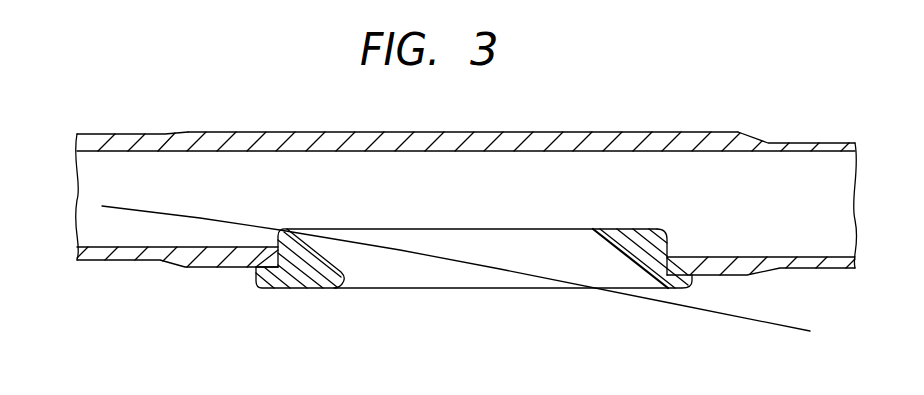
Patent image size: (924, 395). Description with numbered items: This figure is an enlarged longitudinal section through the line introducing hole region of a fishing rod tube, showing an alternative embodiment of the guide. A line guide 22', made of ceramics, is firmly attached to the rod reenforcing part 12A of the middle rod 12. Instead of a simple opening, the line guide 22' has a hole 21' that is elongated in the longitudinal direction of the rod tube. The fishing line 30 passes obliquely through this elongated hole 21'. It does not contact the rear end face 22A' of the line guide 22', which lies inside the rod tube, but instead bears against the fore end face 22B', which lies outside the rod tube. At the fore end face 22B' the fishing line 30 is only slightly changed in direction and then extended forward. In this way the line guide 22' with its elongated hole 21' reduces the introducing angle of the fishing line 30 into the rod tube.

The middle rod 12 is at (431, 140).
The rod reenforcing part 12A is at (570, 140).
The hole 21' is at (477, 296).
The line guide 22' is at (296, 297).
The rear end face 22A' is at (645, 296).
The fore end face 22B' is at (305, 188).
The fishing line 30 is at (731, 314).